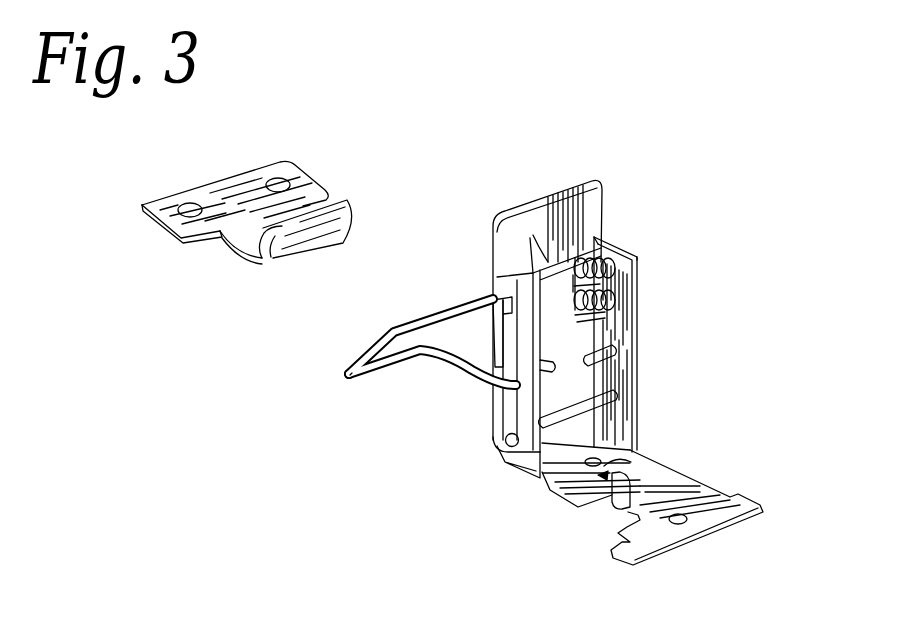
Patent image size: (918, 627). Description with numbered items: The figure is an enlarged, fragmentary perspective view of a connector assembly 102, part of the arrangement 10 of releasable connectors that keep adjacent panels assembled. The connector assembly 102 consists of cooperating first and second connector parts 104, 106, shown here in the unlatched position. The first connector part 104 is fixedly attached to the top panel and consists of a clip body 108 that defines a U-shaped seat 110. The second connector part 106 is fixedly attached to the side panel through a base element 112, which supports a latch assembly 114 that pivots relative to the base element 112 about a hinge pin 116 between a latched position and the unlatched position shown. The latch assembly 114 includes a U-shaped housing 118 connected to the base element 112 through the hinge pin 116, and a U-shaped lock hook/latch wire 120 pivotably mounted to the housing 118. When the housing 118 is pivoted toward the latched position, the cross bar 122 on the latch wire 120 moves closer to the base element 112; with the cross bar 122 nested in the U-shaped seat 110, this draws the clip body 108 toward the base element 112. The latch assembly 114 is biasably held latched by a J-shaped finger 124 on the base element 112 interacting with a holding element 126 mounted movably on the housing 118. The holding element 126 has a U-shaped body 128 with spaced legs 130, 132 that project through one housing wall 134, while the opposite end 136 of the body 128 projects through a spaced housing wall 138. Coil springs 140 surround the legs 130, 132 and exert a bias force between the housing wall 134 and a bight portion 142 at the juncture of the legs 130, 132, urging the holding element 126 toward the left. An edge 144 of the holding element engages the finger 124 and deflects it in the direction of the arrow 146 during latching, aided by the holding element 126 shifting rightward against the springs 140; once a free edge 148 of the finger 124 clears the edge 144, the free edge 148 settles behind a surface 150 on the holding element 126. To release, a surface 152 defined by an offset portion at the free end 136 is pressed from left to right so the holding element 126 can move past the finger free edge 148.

The slide latch assembly 10 is at (693, 107).
The connector assembly 102 is at (330, 166).
The first connector part 104 is at (205, 192).
The second connector part 106 is at (634, 313).
The clip body 108 is at (228, 227).
The U-shaped seat 110 is at (242, 250).
The base element 112 is at (692, 547).
The latch assembly 114 is at (655, 243).
The hinge pin 116 is at (537, 479).
The U-shaped housing 118 is at (518, 220).
The lock hook/latch wire 120 is at (388, 328).
The cross bar 122 is at (490, 307).
The J-shaped finger 124 is at (637, 483).
The holding element 126 is at (588, 253).
The U-shaped body 128 is at (512, 418).
The leg 130 is at (605, 250).
The leg 132 is at (634, 305).
The housing wall 134 is at (622, 361).
The opposite end 136 is at (520, 345).
The housing wall 138 is at (500, 436).
The coil spring 140 is at (634, 275).
The bight portion 142 is at (540, 232).
The edge 144 is at (487, 357).
The arrow 146 is at (706, 421).
The free edge 148 is at (700, 492).
The surface 150 is at (577, 262).
The surface 152 is at (502, 298).